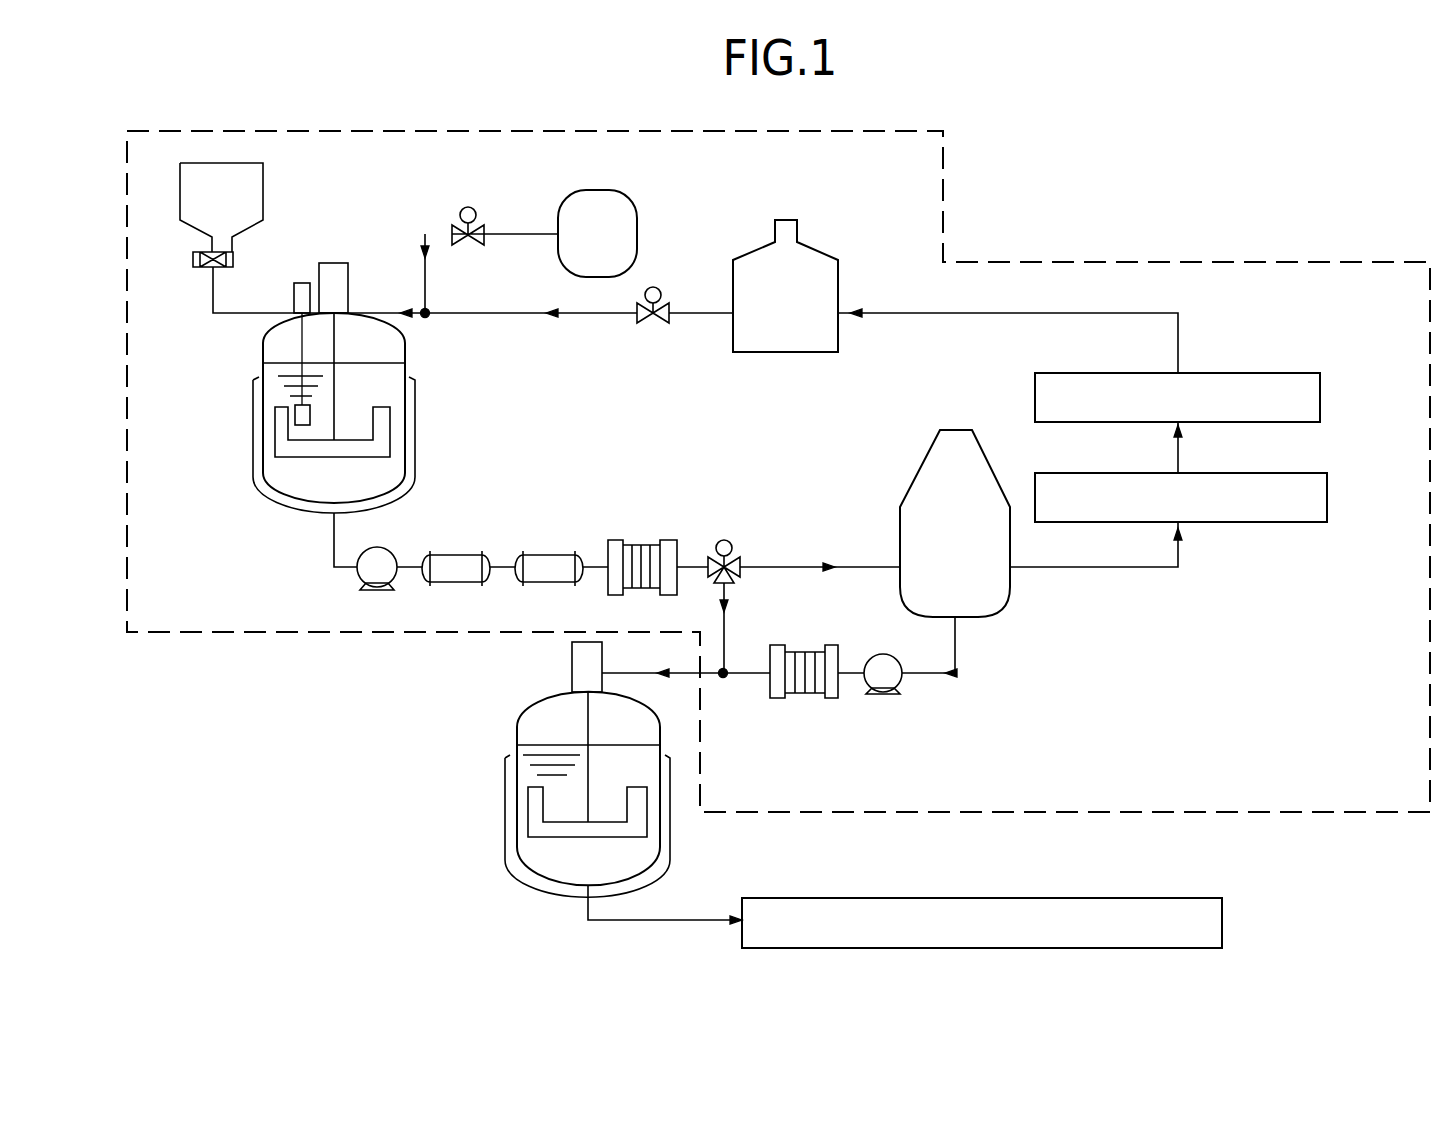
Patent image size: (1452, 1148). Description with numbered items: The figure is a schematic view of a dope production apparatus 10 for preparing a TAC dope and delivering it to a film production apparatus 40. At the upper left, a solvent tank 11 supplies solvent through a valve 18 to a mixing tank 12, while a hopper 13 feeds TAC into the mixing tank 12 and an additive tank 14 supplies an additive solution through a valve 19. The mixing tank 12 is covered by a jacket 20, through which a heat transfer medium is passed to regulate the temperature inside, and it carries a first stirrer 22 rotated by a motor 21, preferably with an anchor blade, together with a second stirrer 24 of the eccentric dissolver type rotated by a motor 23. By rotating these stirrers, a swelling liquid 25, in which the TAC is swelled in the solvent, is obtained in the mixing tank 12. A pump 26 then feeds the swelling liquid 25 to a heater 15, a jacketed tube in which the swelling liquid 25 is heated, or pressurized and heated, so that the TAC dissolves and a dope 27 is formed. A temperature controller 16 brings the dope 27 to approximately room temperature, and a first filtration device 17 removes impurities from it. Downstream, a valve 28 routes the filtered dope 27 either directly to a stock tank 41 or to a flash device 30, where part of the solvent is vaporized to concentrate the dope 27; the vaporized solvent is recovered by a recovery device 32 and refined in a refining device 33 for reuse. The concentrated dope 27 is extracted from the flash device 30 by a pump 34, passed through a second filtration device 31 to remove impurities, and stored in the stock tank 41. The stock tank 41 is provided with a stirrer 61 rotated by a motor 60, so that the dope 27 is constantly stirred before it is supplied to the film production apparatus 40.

The dope production apparatus 10 is at (1092, 251).
The solvent tank 11 is at (838, 277).
The mixing tank 12 is at (405, 355).
The hopper 13 is at (245, 171).
The additive tank 14 is at (637, 232).
The heater 15 is at (455, 552).
The temperature controller 16 is at (548, 552).
The first filtration device 17 is at (642, 540).
The valve 18 is at (653, 322).
The valve 19 is at (468, 207).
The jacket 20 is at (415, 447).
The motor 21 is at (334, 263).
The first stirrer 22 is at (390, 412).
The motor 23 is at (302, 283).
The second stirrer 24 is at (293, 418).
The swelling liquid 25 is at (300, 483).
The pump 26 is at (392, 550).
The dope 27 is at (537, 857).
The valve 28 is at (724, 540).
The flash device 30 is at (905, 476).
The second filtration device 31 is at (812, 698).
The recovery device 32 is at (1327, 498).
The refining device 33 is at (1320, 398).
The pump 34 is at (882, 694).
The film production apparatus 40 is at (1222, 920).
The stock tank 41 is at (517, 727).
The motor 60 is at (572, 673).
The stirrer 61 is at (528, 815).